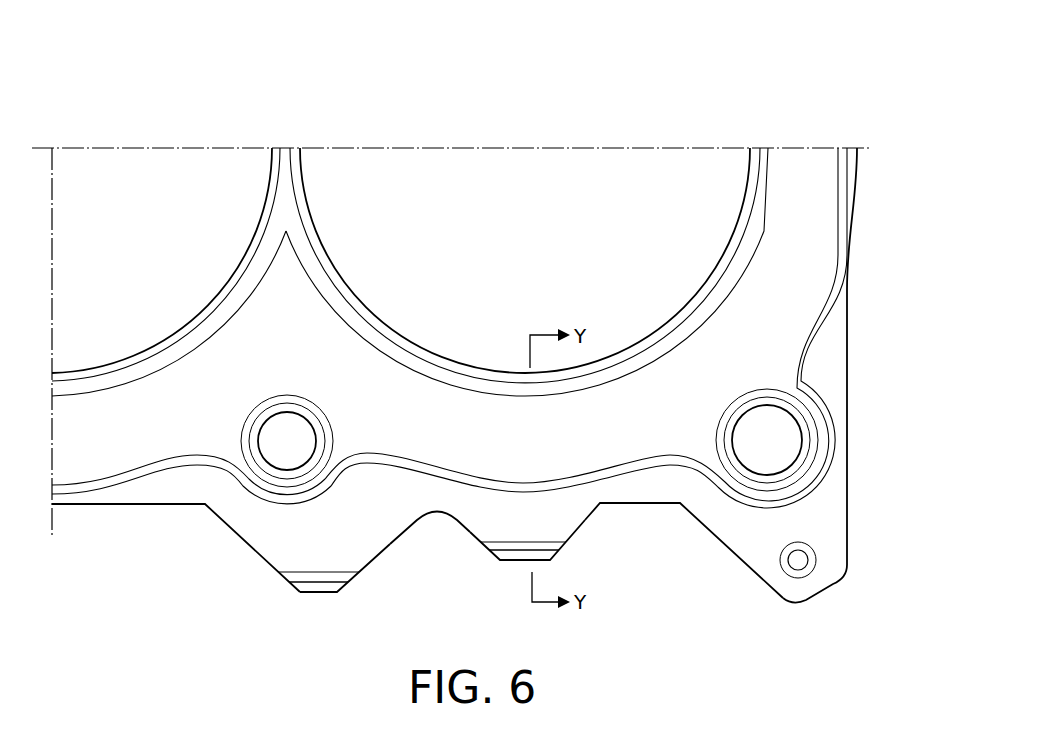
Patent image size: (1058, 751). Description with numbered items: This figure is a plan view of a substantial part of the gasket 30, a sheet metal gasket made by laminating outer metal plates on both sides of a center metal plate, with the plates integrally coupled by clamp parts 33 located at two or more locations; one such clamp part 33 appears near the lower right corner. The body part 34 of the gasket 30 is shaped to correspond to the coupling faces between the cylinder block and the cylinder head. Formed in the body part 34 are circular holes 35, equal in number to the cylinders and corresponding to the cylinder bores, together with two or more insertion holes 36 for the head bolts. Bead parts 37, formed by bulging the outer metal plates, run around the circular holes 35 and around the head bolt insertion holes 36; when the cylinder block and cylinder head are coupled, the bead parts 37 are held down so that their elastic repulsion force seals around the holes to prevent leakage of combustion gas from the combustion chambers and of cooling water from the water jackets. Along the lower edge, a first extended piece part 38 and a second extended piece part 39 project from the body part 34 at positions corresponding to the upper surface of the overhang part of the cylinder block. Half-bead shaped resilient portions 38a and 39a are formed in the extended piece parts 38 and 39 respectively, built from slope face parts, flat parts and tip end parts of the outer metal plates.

The gasket 30 is at (697, 140).
The clamp part 33 is at (806, 577).
The body part 34 is at (165, 494).
The circular hole 35 is at (152, 196).
The insertion hole 36 is at (278, 425).
The bead part 37 is at (333, 430).
The first extended piece part 38 is at (523, 562).
The resilient portion 38a is at (563, 518).
The second extended piece part 39 is at (312, 593).
The resilient portion 39a is at (380, 537).